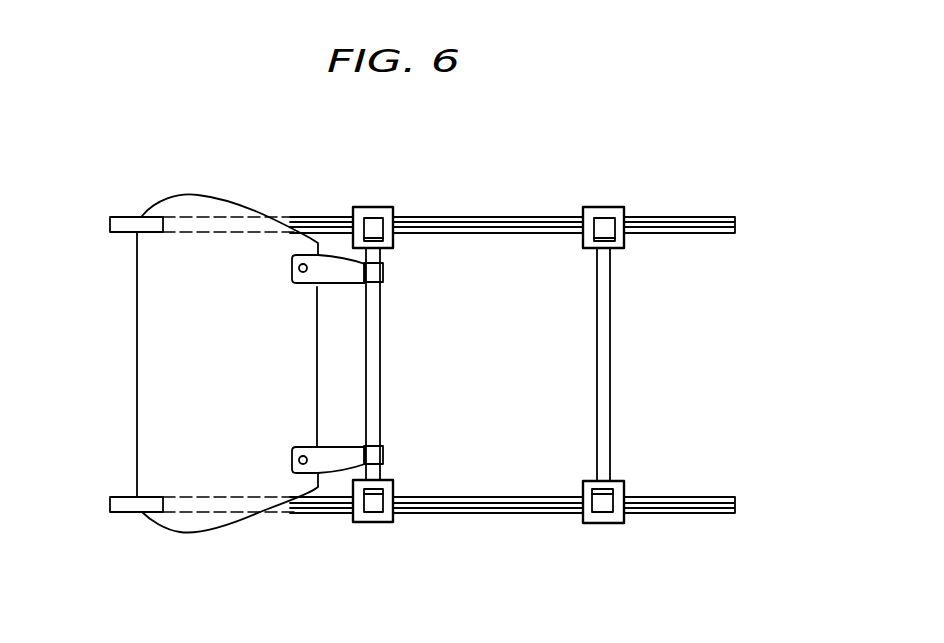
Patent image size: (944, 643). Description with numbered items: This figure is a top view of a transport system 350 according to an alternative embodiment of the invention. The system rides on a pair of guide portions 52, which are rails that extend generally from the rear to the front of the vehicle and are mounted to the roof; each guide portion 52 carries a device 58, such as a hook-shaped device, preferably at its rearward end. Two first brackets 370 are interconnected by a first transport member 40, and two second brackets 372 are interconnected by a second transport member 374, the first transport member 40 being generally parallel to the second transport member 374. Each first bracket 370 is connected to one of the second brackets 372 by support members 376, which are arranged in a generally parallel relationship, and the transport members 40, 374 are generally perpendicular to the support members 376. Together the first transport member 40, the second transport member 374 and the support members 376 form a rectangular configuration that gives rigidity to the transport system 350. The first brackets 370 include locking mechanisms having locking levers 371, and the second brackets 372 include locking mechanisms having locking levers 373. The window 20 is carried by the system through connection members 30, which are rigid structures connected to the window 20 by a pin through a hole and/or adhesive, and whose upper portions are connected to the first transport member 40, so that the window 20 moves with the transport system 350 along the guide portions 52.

The transport system 350 is at (552, 114).
The first brackets 370 is at (372, 200).
The locking levers 371 is at (377, 223).
The second brackets 372 is at (600, 200).
The locking levers 373 is at (605, 228).
The second transport member 374 is at (606, 362).
The support members 376 is at (488, 216).
The guide portions 52 is at (714, 217).
The device 58 is at (133, 225).
The window 20 is at (157, 365).
The connection member 30 is at (390, 278).
The first transport member 40 is at (392, 354).